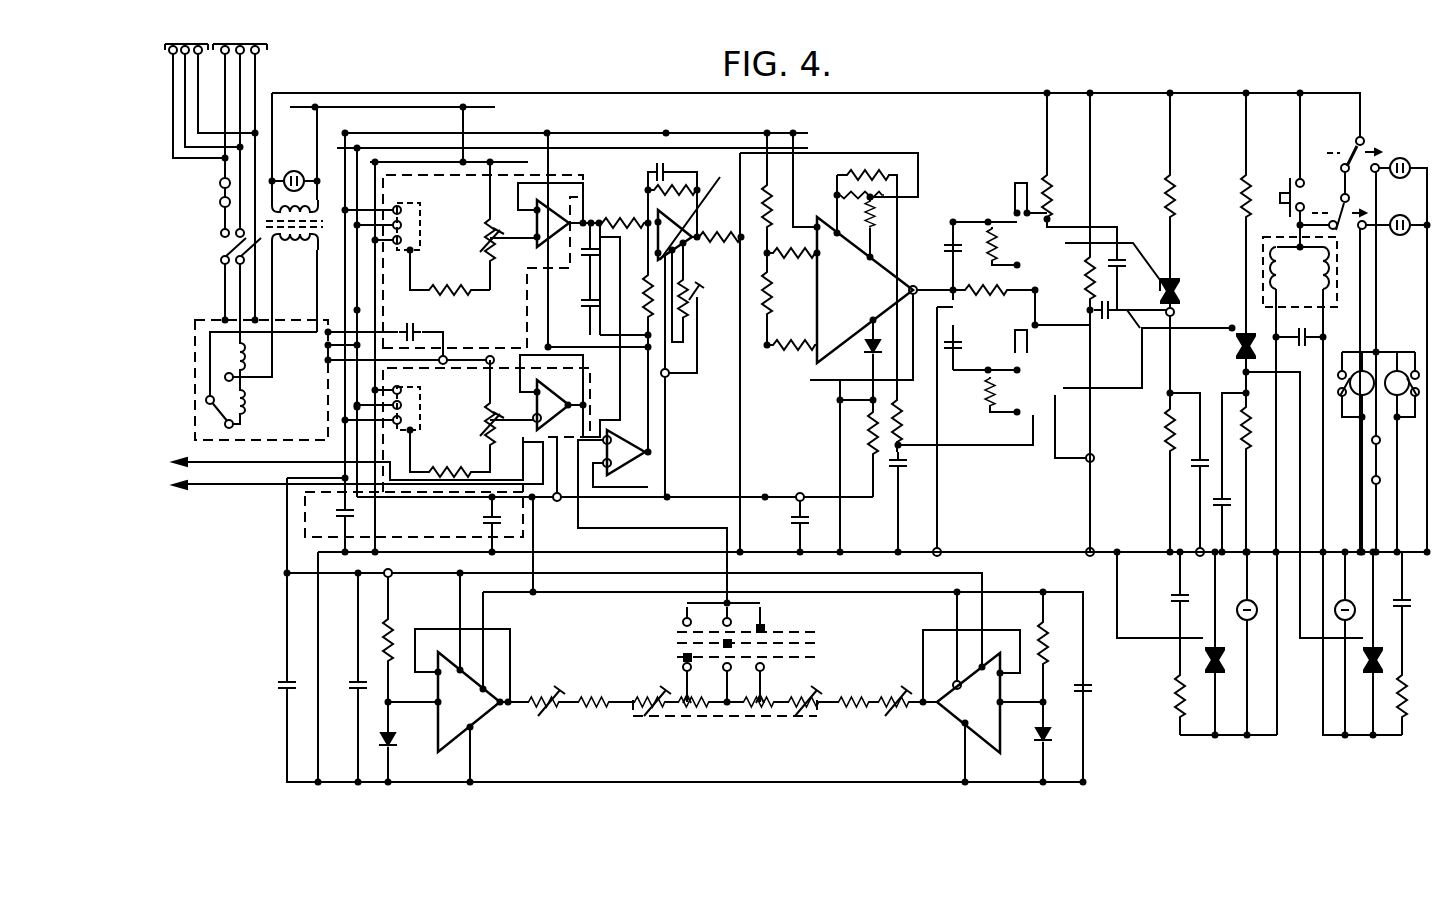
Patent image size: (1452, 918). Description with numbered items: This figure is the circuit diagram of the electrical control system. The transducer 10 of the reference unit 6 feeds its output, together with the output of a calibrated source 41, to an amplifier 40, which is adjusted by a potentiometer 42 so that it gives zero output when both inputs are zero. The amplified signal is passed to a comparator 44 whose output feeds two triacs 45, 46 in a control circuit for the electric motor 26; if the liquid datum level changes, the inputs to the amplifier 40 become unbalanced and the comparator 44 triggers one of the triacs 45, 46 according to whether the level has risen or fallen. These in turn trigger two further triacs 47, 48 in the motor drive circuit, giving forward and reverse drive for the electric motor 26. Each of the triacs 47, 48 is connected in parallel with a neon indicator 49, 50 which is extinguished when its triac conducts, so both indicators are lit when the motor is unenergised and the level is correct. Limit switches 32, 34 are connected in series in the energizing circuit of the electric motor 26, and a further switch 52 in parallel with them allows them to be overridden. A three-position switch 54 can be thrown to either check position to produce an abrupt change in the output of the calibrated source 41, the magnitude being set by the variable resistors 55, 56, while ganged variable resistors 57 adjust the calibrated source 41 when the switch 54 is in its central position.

The reference unit 6 is at (587, 207).
The transducer 10 is at (438, 407).
The electric motor 26 is at (1338, 278).
The limit switch 32 is at (1338, 210).
The limit switch 34 is at (1365, 150).
The amplifier 40 is at (705, 208).
The calibrated source 41 is at (698, 717).
The potentiometer 42 is at (700, 290).
The comparator 44 is at (883, 267).
The triac 45 is at (1175, 292).
The triac 46 is at (1236, 351).
The triac 47 is at (1205, 660).
The triac 48 is at (1362, 672).
The neon indicator 49 is at (1238, 605).
The neon indicator 50 is at (1345, 622).
The switch 52 is at (1287, 178).
The three-position switch 54 is at (742, 628).
The variable resistor 55 is at (553, 698).
The variable resistor 56 is at (880, 697).
The ganged variable resistors 57 is at (698, 718).